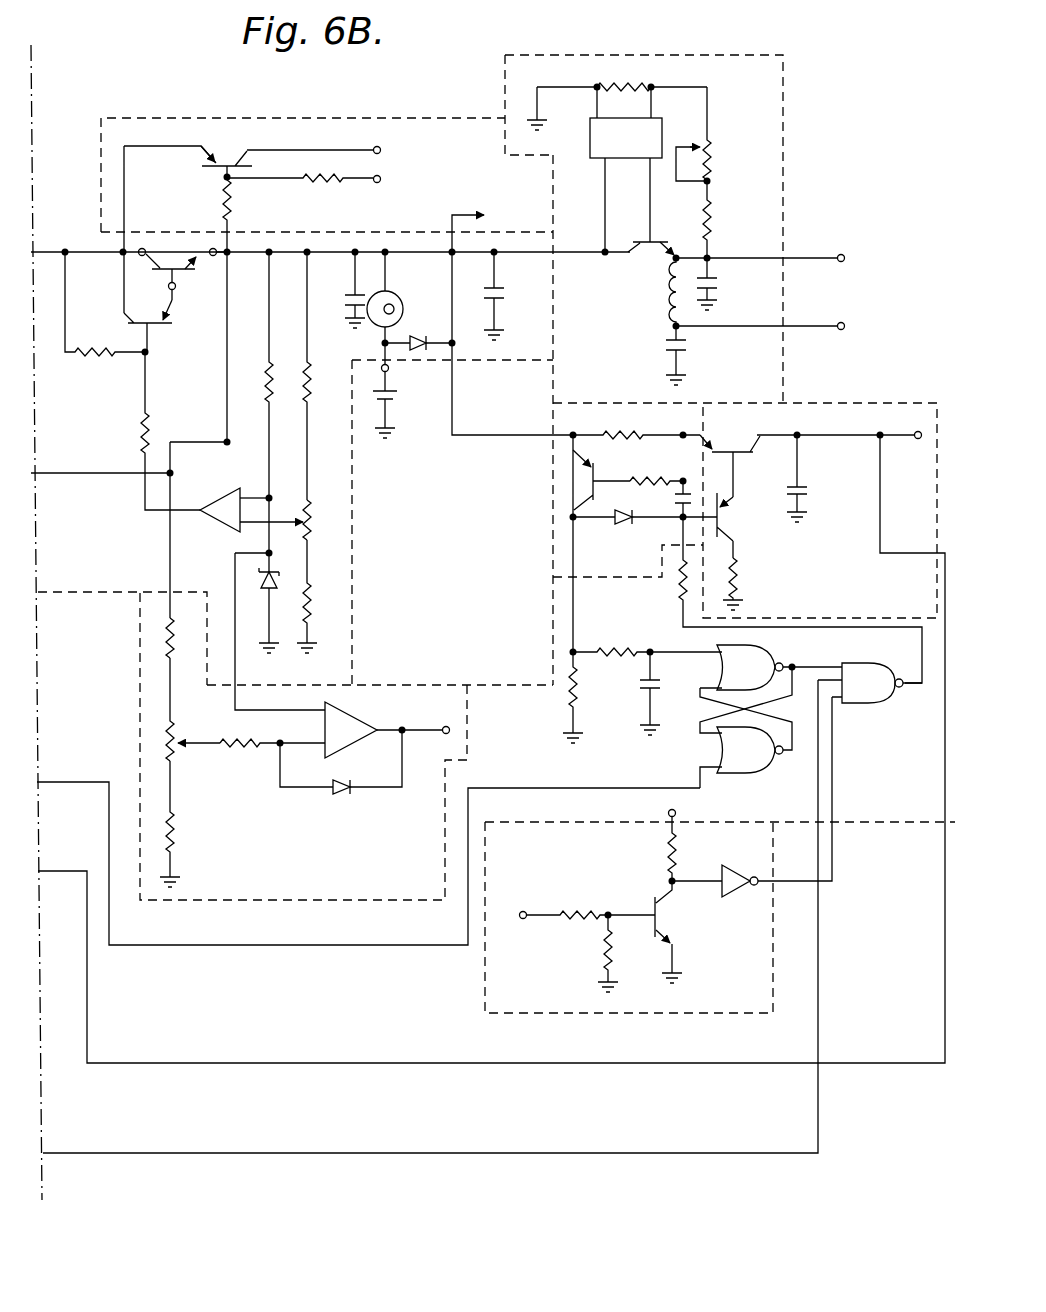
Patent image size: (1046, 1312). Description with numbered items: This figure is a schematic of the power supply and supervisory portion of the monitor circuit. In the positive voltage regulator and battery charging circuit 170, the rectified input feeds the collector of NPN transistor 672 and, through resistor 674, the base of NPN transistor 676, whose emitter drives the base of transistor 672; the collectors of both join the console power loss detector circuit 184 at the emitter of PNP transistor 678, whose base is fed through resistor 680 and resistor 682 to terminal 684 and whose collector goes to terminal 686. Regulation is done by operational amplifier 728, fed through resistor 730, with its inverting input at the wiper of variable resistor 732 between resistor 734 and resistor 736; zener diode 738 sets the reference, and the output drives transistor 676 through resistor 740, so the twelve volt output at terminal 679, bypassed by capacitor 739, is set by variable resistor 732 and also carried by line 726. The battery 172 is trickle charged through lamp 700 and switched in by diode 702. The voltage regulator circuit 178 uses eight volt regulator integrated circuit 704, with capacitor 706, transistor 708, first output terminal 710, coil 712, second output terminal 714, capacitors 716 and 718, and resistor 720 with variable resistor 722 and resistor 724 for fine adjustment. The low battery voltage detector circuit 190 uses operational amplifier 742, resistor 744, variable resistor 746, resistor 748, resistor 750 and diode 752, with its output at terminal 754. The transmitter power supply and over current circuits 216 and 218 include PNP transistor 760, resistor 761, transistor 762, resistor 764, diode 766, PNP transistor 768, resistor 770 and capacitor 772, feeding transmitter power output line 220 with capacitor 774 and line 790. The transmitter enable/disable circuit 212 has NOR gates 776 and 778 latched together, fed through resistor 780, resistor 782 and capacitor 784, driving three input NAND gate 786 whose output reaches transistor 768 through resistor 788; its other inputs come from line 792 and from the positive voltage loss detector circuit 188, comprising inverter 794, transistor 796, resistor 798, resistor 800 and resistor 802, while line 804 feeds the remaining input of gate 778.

The positive voltage regulator and battery charging circuit 170 is at (358, 532).
The battery 172 is at (394, 399).
The voltage regulator circuit 178 is at (792, 124).
The console power loss detector circuit 184 is at (327, 117).
The positive voltage loss detector circuit 188 is at (481, 979).
The low battery voltage detector circuit 190 is at (441, 685).
The transmitter enable/disable circuit 212 is at (538, 634).
The transmitter power supply circuit 216 is at (810, 401).
The over current circuit 218 is at (547, 467).
The transmitter power output line 220 is at (917, 432).
The NPN transistor 672 is at (183, 258).
The resistor 674 is at (107, 304).
The NPN transistor 676 is at (148, 318).
The PNP transistor 678 is at (189, 216).
The terminal 679 is at (451, 250).
The resistor 680 is at (250, 209).
The resistor 682 is at (300, 188).
The terminal 684 is at (379, 183).
The terminal 686 is at (392, 140).
The lamp 700 is at (409, 299).
The diode 702 is at (418, 351).
The eight volt regulator integrated circuit 704 is at (626, 169).
The capacitor 706 is at (517, 296).
The transistor 708 is at (653, 264).
The first regulated eight volt DC output terminal 710 is at (840, 254).
The coil 712 is at (653, 294).
The second regulated eight volt DC output terminal 714 is at (846, 314).
The capacitor 716 is at (728, 284).
The capacitor 718 is at (699, 355).
The resistor 720 is at (731, 221).
The variable resistor 722 is at (715, 136).
The resistor 724 is at (617, 96).
The line 726 is at (104, 474).
The operational amplifier 728 is at (243, 524).
The resistor 730 is at (257, 404).
The variable resistor 732 is at (330, 520).
The resistor 734 is at (328, 376).
The resistor 736 is at (327, 596).
The zener diode 738 is at (262, 605).
The capacitor 739 is at (350, 300).
The resistor 740 is at (170, 431).
The operational amplifier 742 is at (338, 655).
The resistor 744 is at (231, 758).
The variable resistor 746 is at (162, 742).
The resistor 748 is at (196, 824).
The resistor 750 is at (165, 633).
The diode 752 is at (341, 781).
The terminal 754 is at (444, 726).
The PNP transistor 760 is at (591, 476).
The resistor 761 is at (635, 423).
The transistor 762 is at (732, 459).
The resistor 764 is at (656, 469).
The diode 766 is at (644, 540).
The PNP transistor 768 is at (742, 525).
The resistor 770 is at (750, 584).
The capacitor 772 is at (662, 501).
The capacitor 774 is at (820, 477).
The NOR gate 776 is at (771, 689).
The NOR gate 778 is at (746, 738).
The resistor 780 is at (646, 586).
The resistor 782 is at (595, 697).
The capacitor 784 is at (640, 688).
The three input NAND gate 786 is at (870, 683).
The resistor 788 is at (781, 600).
The line 790 is at (880, 516).
The line 792 is at (817, 768).
The inverter 794 is at (752, 797).
The transistor 796 is at (683, 932).
The resistor 798 is at (655, 838).
The resistor 800 is at (573, 905).
The resistor 802 is at (585, 953).
The line 804 is at (578, 770).